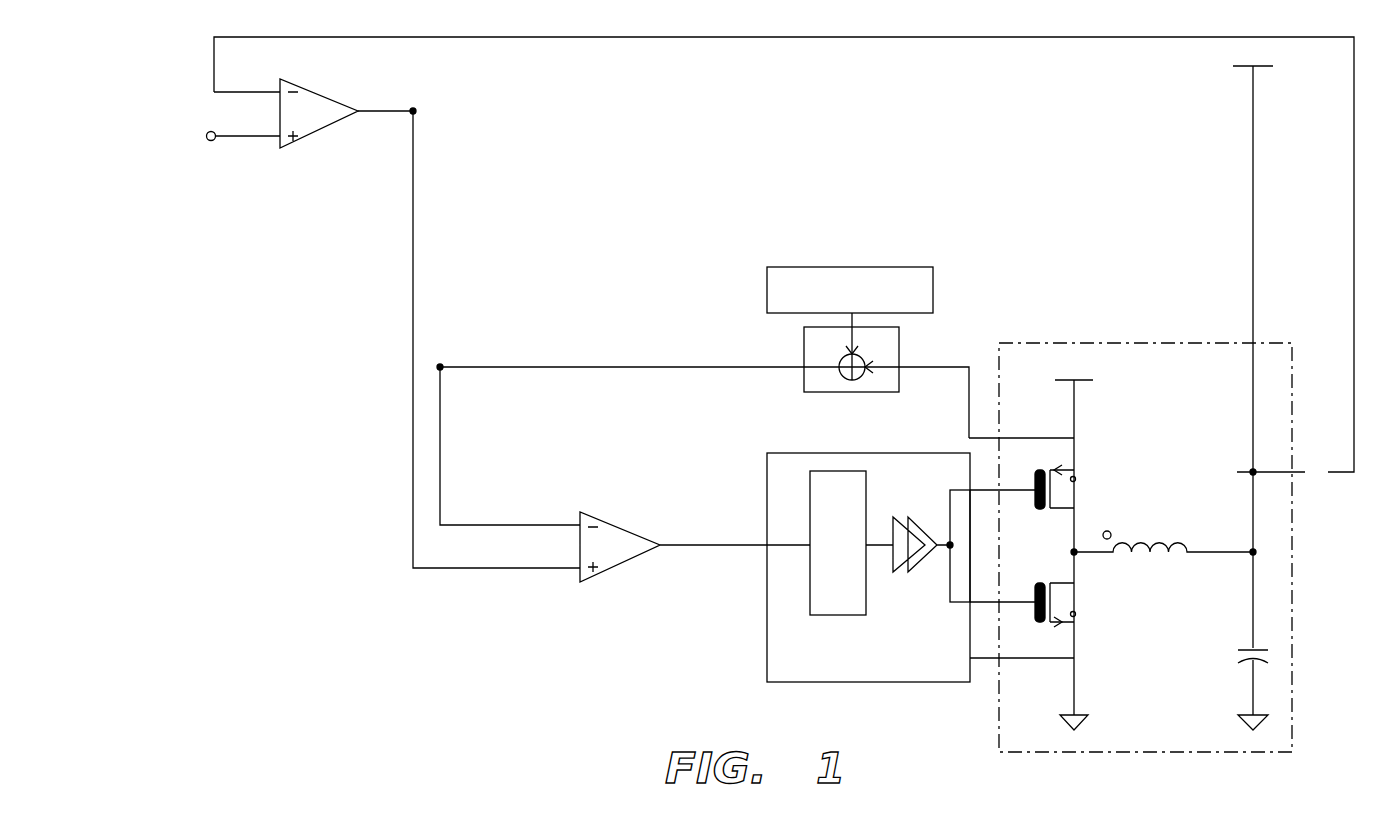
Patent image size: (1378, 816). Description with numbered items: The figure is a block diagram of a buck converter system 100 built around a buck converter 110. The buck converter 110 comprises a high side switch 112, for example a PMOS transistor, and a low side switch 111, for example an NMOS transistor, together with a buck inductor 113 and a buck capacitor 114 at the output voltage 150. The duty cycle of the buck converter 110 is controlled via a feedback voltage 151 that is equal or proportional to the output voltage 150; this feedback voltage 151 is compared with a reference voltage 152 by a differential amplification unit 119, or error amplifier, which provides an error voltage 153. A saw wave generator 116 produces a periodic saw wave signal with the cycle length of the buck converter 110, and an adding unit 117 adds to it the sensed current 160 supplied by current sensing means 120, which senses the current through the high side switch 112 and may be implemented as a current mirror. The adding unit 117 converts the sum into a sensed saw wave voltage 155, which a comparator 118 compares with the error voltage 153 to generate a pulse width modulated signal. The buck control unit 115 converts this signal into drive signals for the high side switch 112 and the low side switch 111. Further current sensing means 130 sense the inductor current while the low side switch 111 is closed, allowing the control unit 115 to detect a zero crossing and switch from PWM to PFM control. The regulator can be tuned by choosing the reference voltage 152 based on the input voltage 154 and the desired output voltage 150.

The buck converter system 100 is at (480, 657).
The buck converter 110 is at (1146, 754).
The low side switch 111 is at (1077, 594).
The high side switch 112 is at (1077, 500).
The buck inductor 113 is at (1157, 562).
The buck capacitor 114 is at (1236, 656).
The buck control unit 115 is at (900, 685).
The saw wave generator 116 is at (885, 266).
The adding unit 117 is at (822, 392).
The comparator 118 is at (628, 560).
The differential amplification unit 119 is at (345, 130).
The current sensing means 120 is at (1092, 436).
The current sensing means 130 is at (1090, 656).
The output voltage 150 is at (1240, 472).
The feedback voltage 151 is at (217, 45).
The reference voltage 152 is at (236, 138).
The error voltage 153 is at (414, 128).
The input voltage 154 is at (1080, 387).
The sensed saw wave voltage 155 is at (550, 523).
The sensed current 160 is at (971, 386).